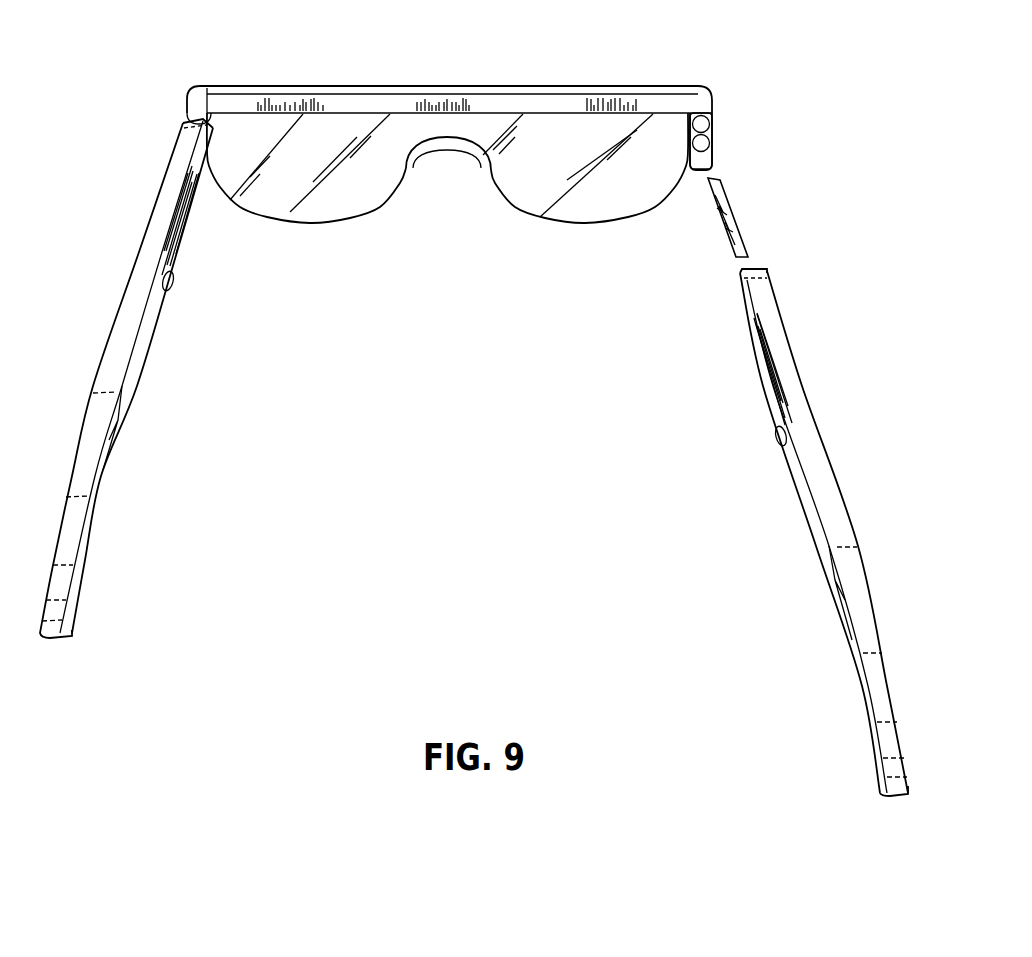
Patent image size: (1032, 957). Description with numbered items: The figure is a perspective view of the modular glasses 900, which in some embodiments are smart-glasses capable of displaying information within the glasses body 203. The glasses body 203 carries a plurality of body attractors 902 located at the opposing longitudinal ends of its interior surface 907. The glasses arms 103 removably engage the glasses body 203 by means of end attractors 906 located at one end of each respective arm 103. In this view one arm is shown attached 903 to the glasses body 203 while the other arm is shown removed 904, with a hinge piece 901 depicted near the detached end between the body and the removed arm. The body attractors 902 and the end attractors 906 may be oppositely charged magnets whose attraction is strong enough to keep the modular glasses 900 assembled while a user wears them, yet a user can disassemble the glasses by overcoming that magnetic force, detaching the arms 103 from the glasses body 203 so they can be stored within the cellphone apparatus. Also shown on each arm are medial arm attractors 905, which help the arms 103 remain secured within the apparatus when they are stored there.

The modular glasses 900 is at (300, 30).
The glasses body 203 is at (545, 107).
The interior surface 907 is at (331, 130).
The body attractors 902 is at (714, 120).
The hinge piece 901 is at (723, 203).
The end attractors 906 is at (747, 269).
The attached arm 903 is at (125, 328).
The removed arm 904 is at (838, 528).
The medial arm attractors 905 is at (175, 283).
The glasses arms 103 is at (82, 478).